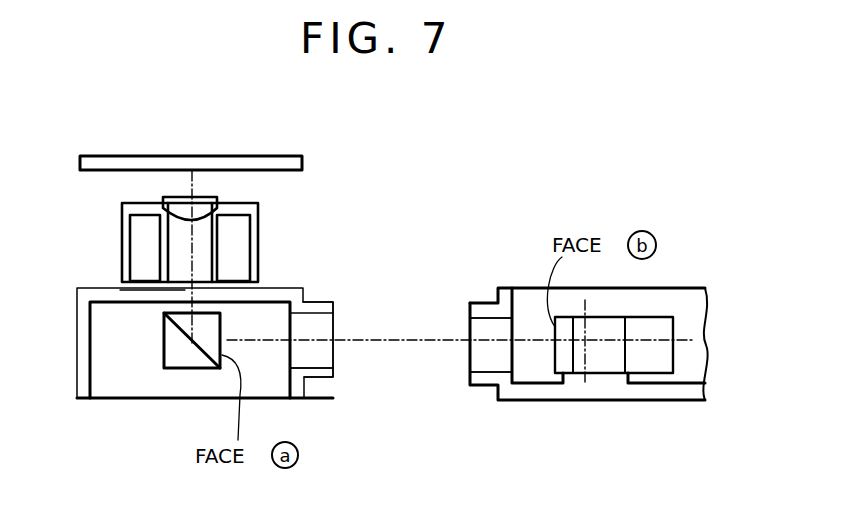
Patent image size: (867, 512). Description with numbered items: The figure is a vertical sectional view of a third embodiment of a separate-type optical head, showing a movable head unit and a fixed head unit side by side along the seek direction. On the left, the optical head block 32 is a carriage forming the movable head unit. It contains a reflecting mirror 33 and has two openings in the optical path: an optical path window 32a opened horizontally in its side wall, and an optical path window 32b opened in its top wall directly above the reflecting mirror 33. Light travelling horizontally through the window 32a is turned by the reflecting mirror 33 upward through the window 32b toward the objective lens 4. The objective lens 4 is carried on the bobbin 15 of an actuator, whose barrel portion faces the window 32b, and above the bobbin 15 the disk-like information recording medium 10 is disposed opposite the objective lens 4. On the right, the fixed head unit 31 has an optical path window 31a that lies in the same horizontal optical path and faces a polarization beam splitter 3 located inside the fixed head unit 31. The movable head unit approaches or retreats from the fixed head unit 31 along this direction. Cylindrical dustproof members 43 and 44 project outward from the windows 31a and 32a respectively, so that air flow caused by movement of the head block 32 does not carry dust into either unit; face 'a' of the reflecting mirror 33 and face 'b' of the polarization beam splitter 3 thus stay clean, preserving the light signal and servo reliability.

The disk-like information recording medium 10 is at (262, 155).
The objective lens 4 is at (217, 200).
The bobbin 15 is at (260, 242).
The optical head block 32 is at (83, 380).
The optical path window 32a is at (305, 328).
The optical path window 32b is at (185, 297).
The reflecting mirror 33 is at (187, 362).
The cylindrical dustproof member 44 is at (330, 378).
The fixed head unit 31 is at (542, 393).
The optical path window 31a is at (488, 330).
The cylindrical dustproof member 43 is at (472, 375).
The polarization beam splitter 3 is at (655, 363).